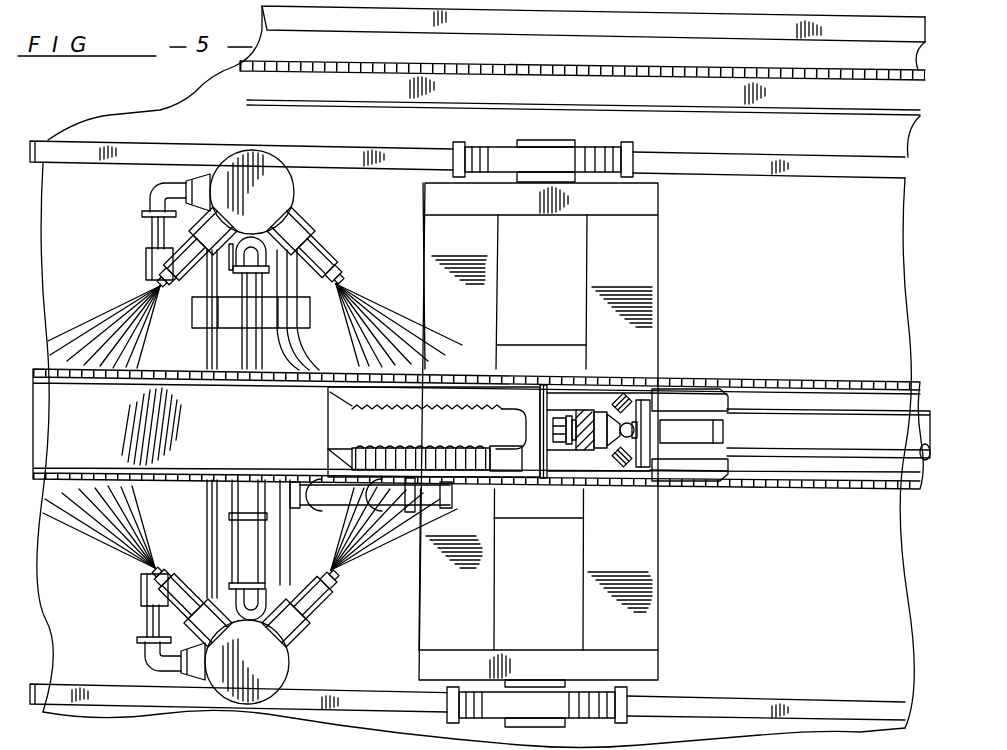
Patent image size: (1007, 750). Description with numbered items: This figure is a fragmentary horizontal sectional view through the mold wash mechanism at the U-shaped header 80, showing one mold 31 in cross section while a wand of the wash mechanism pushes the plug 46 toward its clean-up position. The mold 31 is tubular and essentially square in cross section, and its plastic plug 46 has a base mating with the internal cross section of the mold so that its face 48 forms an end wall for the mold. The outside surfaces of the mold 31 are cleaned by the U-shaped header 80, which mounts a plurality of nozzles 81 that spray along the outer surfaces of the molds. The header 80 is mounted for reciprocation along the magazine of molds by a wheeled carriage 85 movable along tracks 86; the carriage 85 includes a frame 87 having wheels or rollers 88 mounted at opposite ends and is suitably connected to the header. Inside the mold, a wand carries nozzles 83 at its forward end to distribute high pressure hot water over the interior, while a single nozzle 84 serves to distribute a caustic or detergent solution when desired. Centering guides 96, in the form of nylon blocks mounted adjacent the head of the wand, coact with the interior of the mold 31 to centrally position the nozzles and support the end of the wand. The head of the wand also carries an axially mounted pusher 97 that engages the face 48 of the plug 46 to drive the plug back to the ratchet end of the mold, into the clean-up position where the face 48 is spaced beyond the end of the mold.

The mold 31 is at (783, 383).
The plastic plug 46 is at (537, 461).
The face 48 is at (551, 463).
The U-shaped header 80 is at (293, 192).
The nozzles 81 is at (330, 258).
The nozzles 83 is at (621, 394).
The single nozzle 84 is at (548, 426).
The wheeled carriage 85 is at (661, 547).
The tracks 86 is at (711, 165).
The frame 87 is at (643, 593).
The wheels or rollers 88 is at (588, 706).
The centering guides 96 is at (710, 393).
The pusher 97 is at (579, 412).